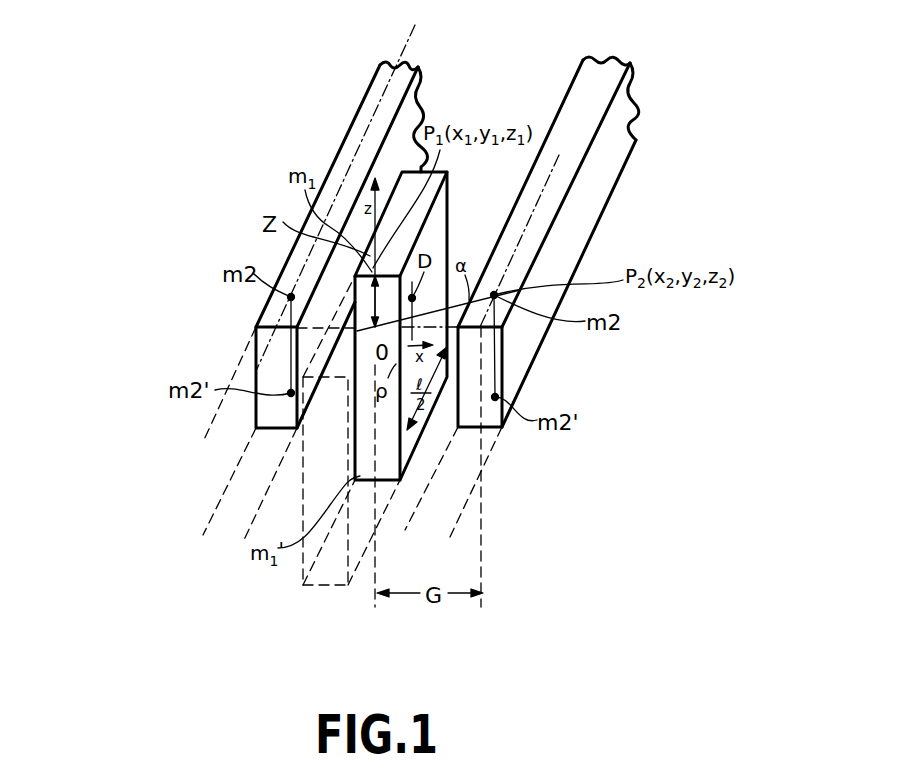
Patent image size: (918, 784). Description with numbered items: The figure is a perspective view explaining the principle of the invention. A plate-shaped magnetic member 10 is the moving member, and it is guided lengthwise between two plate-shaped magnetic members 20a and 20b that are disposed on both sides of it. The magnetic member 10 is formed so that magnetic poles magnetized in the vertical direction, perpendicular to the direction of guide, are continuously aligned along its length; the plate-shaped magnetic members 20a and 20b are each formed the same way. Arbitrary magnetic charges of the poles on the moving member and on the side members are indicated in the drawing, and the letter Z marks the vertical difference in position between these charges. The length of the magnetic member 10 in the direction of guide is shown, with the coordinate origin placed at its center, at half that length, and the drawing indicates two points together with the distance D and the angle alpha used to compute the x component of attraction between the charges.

The plate-shaped magnetic member 10 is at (447, 237).
The plate-shaped magnetic member 20a is at (380, 73).
The plate-shaped magnetic member 20b is at (577, 86).